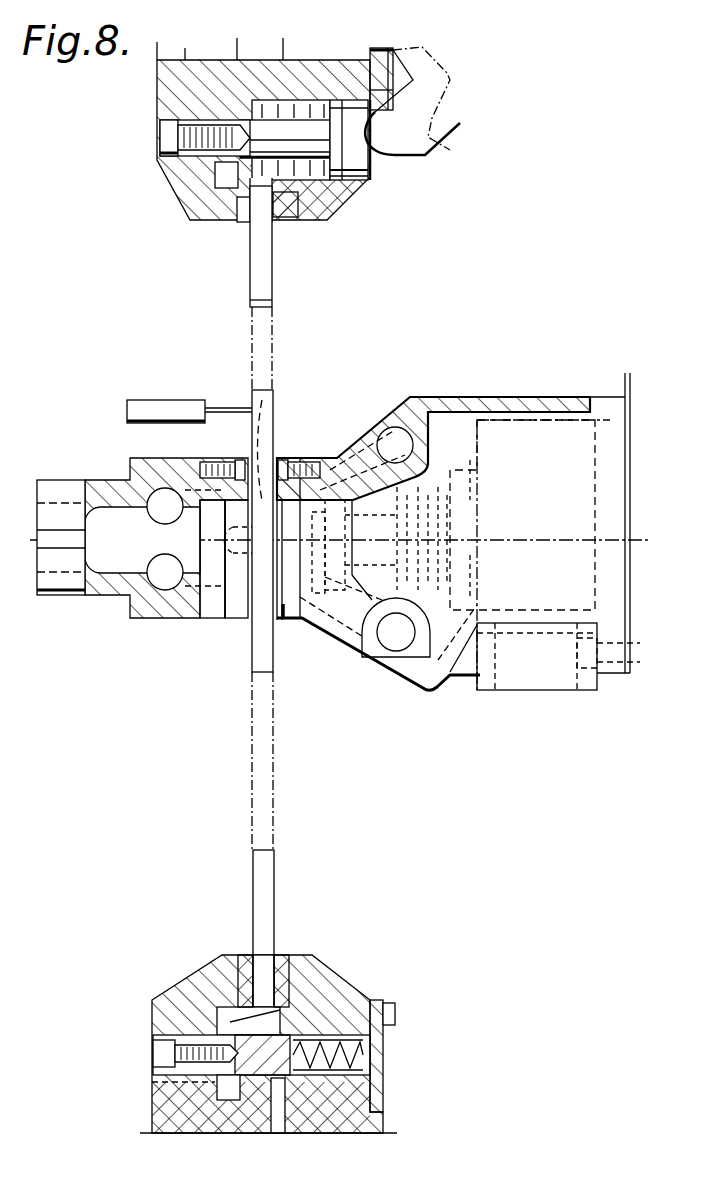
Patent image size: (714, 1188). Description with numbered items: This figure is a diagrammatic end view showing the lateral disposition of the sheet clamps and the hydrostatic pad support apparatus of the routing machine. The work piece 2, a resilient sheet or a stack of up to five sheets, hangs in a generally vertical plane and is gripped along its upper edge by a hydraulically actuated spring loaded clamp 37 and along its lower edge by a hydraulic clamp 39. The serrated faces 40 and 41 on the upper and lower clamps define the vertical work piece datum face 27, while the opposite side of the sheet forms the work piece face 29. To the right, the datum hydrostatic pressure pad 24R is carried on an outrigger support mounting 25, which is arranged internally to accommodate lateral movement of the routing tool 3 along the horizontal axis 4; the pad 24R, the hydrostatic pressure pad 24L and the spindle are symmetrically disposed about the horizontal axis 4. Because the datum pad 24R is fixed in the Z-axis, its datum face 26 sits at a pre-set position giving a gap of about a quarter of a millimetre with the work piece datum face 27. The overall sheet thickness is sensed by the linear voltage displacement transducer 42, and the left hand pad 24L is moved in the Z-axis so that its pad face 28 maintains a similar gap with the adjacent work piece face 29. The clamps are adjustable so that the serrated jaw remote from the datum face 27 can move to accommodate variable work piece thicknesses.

The work piece 2 is at (250, 276).
The routing tool 3 is at (270, 442).
The horizontal axis 4 is at (510, 542).
The hydrostatic pressure pad 24L is at (242, 598).
The datum hydrostatic pressure pad 24R is at (303, 622).
The outrigger support mounting 25 is at (343, 430).
The datum face 26 is at (291, 606).
The work piece datum face 27 is at (274, 294).
The pad face 28 is at (232, 618).
The work piece face 29 is at (252, 656).
The spring loaded clamp 37 is at (175, 170).
The hydraulic clamp 39 is at (152, 1022).
The serrated face 40 is at (287, 217).
The serrated face 41 is at (280, 954).
The linear voltage displacement transducer 42 is at (162, 400).